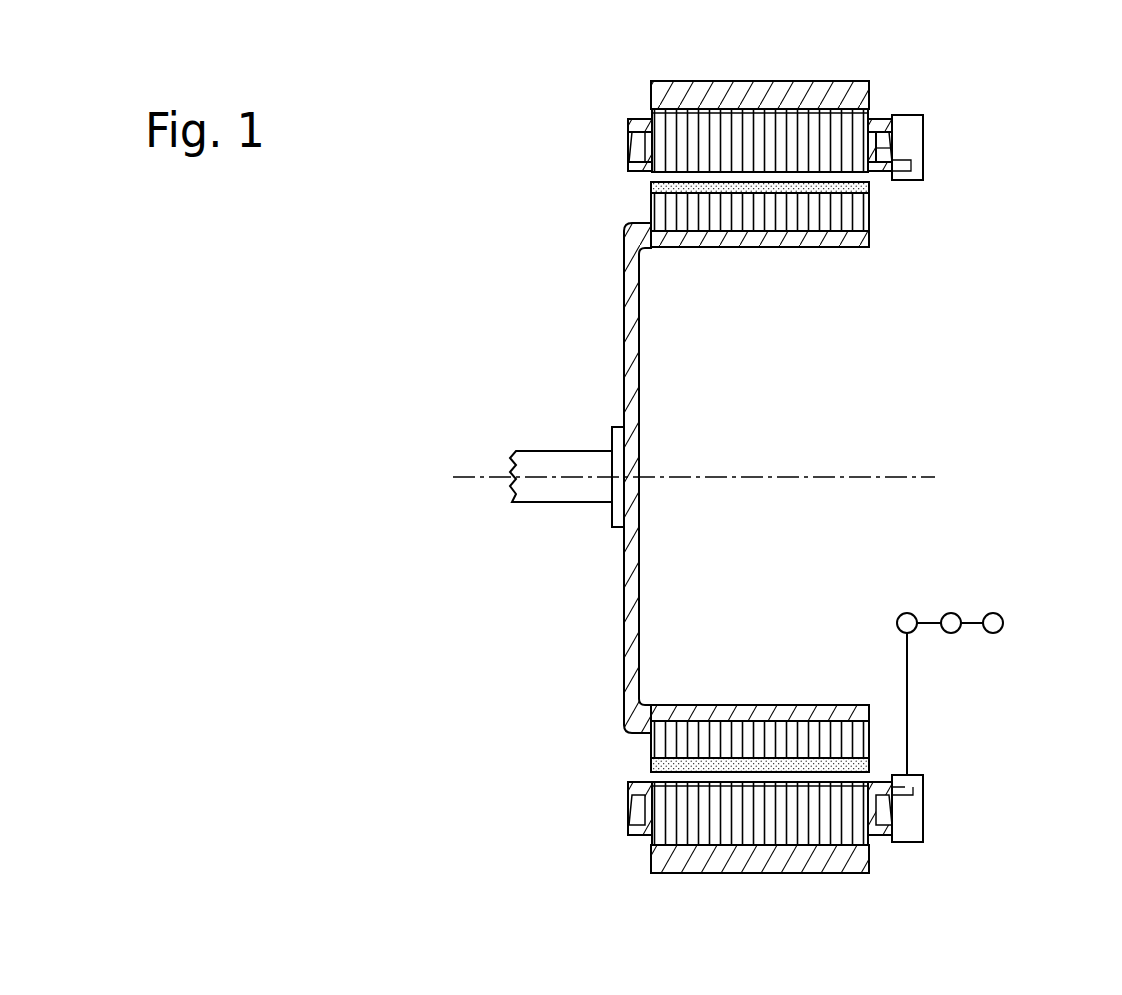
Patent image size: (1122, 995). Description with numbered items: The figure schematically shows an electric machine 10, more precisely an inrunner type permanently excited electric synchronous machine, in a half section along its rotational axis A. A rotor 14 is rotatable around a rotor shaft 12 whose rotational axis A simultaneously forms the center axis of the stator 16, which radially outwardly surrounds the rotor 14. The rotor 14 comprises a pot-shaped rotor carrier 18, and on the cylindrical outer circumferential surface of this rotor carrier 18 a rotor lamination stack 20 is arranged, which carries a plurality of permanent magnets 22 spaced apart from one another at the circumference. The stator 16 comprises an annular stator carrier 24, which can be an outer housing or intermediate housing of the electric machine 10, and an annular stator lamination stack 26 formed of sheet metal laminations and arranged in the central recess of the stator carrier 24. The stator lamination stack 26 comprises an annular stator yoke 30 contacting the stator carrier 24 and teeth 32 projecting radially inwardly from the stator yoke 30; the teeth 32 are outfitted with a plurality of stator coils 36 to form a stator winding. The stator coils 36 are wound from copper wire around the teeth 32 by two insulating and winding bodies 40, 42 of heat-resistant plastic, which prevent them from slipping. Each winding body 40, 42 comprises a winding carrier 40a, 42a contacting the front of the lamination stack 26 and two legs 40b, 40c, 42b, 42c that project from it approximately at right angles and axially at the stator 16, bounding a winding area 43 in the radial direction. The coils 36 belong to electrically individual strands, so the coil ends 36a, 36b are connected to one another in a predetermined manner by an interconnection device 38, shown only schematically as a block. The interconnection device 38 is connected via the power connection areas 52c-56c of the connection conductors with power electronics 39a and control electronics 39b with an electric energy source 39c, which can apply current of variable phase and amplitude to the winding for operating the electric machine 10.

The electric machine 10 is at (561, 756).
The rotor shaft 12 is at (545, 451).
The rotor 14 is at (578, 478).
The stator 16 is at (768, 449).
The rotor carrier 18 is at (624, 668).
The rotor lamination stack 20 is at (675, 452).
The permanent magnets 22 is at (651, 189).
The stator carrier 24 is at (828, 80).
The stator lamination stack 26 is at (631, 848).
The stator yoke 30 is at (870, 112).
The teeth 32 is at (812, 173).
The stator coils 36 is at (939, 509).
The coil end 36a is at (902, 181).
The coil end 36b is at (910, 178).
The interconnection device 38 is at (958, 474).
The power electronics 39a is at (905, 613).
The control electronics 39b is at (951, 612).
The electric energy source 39c is at (995, 613).
The winding body 40 is at (958, 176).
The winding carrier 40a is at (879, 148).
The leg 40b is at (876, 172).
The leg 40c is at (878, 142).
The winding body 42 is at (570, 88).
The winding carrier 42a is at (627, 153).
The leg 42b is at (627, 165).
The leg 42c is at (628, 140).
The winding area 43 is at (636, 812).
The power connection areas 52c-56c is at (907, 677).
The rotational axis A is at (466, 481).